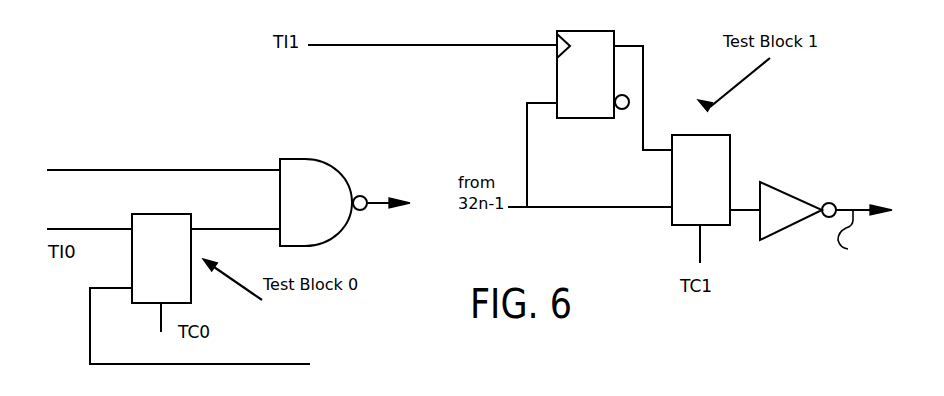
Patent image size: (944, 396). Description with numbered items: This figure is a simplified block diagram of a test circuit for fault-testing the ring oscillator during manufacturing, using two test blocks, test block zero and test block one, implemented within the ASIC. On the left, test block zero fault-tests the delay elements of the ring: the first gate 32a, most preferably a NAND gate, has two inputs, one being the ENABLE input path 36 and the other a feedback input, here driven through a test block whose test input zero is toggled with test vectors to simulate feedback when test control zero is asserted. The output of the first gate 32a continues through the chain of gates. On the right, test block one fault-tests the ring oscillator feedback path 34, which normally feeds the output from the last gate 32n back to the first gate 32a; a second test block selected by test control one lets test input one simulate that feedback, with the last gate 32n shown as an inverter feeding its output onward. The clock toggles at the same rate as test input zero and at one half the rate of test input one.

The ENABLE input path 36 is at (217, 170).
The path 34 is at (276, 364).
The first gate 32a is at (372, 152).
The last gate 32n is at (838, 166).